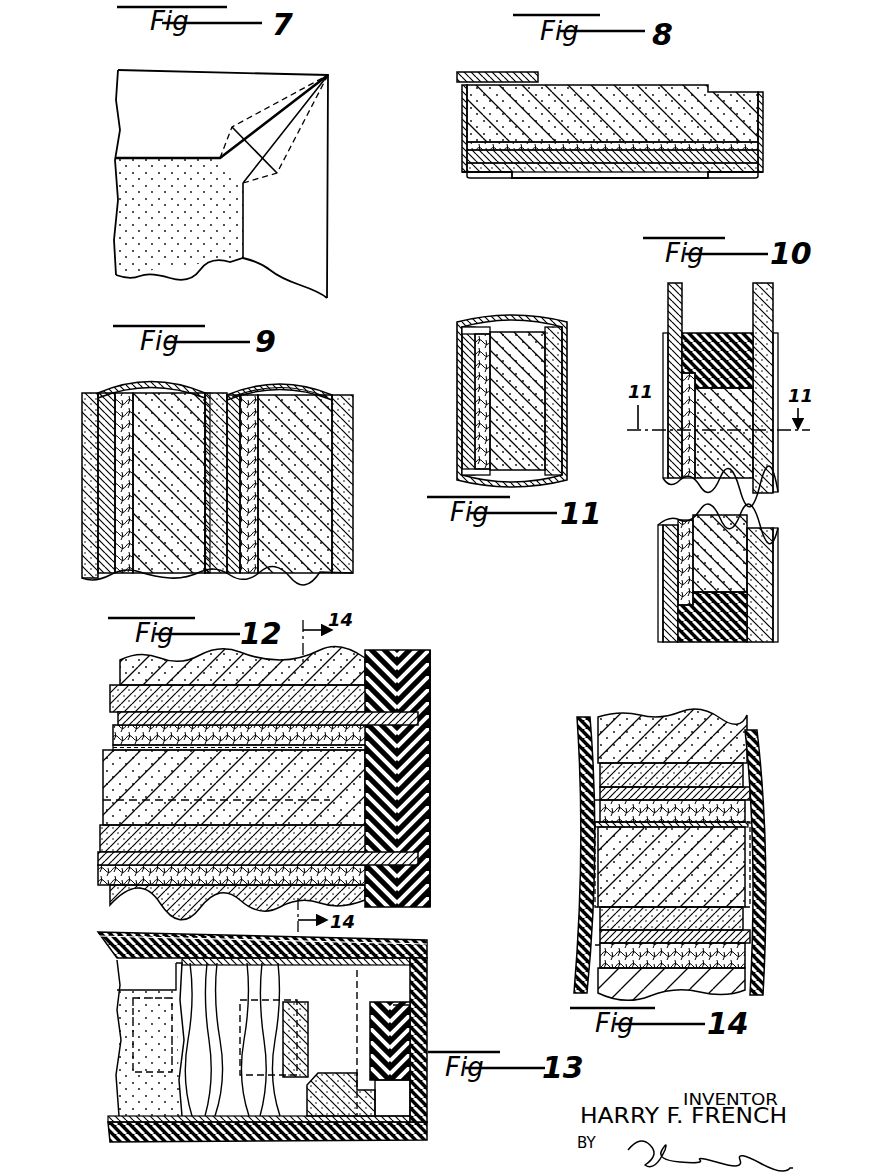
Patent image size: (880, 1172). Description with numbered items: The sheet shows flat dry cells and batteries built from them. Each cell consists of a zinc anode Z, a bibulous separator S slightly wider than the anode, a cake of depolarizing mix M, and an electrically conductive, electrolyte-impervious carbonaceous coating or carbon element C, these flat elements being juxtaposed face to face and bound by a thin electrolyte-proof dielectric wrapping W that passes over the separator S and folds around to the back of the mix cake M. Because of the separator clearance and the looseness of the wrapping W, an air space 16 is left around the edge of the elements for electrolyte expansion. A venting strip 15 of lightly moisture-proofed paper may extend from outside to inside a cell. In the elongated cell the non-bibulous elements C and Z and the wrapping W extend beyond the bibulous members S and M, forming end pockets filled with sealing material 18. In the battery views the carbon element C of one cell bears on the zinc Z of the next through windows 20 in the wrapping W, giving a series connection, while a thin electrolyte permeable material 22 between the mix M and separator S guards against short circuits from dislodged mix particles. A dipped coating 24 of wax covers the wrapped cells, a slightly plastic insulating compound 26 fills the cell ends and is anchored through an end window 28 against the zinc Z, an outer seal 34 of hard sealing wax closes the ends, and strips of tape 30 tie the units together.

In FIG. 8, the strip 15 is at (457, 72).
In FIG. 9, the air space 16 is at (286, 392).
In FIG. 11, the air space 16 is at (495, 321).
In FIG. 14, the air space 16 is at (597, 826).
In FIG. 10, the sealing material 18 is at (718, 333).
In FIG. 12, the windows 20 is at (257, 862).
In FIG. 13, the windows 20 is at (133, 1016).
In FIG. 12, the electrolyte permeable material 22 is at (137, 750).
In FIG. 13, the electrolyte permeable material 22 is at (197, 1039).
In FIG. 14, the electrolyte permeable material 22 is at (755, 856).
In FIG. 13, the dipped coating 24 is at (160, 940).
In FIG. 14, the dipped coating 24 is at (581, 740).
In FIG. 12, the insulating compound 26 is at (432, 816).
In FIG. 13, the insulating compound 26 is at (427, 1041).
In FIG. 13, the end window 28 is at (393, 1005).
In FIG. 13, the tape 30 is at (427, 961).
In FIG. 12, the outer seal 34 is at (432, 742).
In FIG. 13, the outer seal 34 is at (427, 1019).
In FIG. 7, the mix M is at (143, 211).
In FIG. 8, the mix M is at (467, 100).
In FIG. 9, the mix M is at (170, 402).
In FIG. 11, the mix M is at (530, 336).
In FIG. 10, the mix M is at (735, 533).
In FIG. 12, the mix M is at (120, 669).
In FIG. 13, the mix M is at (149, 1038).
In FIG. 14, the mix M is at (735, 723).
In FIG. 7, the wrapping W is at (300, 182).
In FIG. 8, the wrapping W is at (462, 130).
In FIG. 9, the wrapping W is at (258, 388).
In FIG. 11, the wrapping W is at (515, 313).
In FIG. 10, the wrapping W is at (778, 470).
In FIG. 12, the wrapping W is at (117, 813).
In FIG. 13, the wrapping W is at (427, 976).
In FIG. 14, the wrapping W is at (595, 801).
In FIG. 8, the separator S is at (760, 138).
In FIG. 9, the separator S is at (124, 555).
In FIG. 11, the separator S is at (478, 341).
In FIG. 10, the separator S is at (690, 515).
In FIG. 12, the separator S is at (113, 736).
In FIG. 13, the separator S is at (232, 1039).
In FIG. 14, the separator S is at (750, 814).
In FIG. 8, the anode Z is at (472, 160).
In FIG. 9, the anode Z is at (108, 393).
In FIG. 11, the anode Z is at (467, 390).
In FIG. 10, the anode Z is at (668, 296).
In FIG. 12, the anode Z is at (118, 719).
In FIG. 13, the anode Z is at (275, 1039).
In FIG. 14, the anode Z is at (750, 794).
In FIG. 8, the carbonaceous coating C is at (582, 178).
In FIG. 9, the carbonaceous coating C is at (88, 393).
In FIG. 11, the carbonaceous coating C is at (555, 372).
In FIG. 10, the carbonaceous coating C is at (773, 303).
In FIG. 12, the carbonaceous coating C is at (110, 696).
In FIG. 13, the carbonaceous coating C is at (320, 1074).
In FIG. 14, the carbonaceous coating C is at (600, 779).